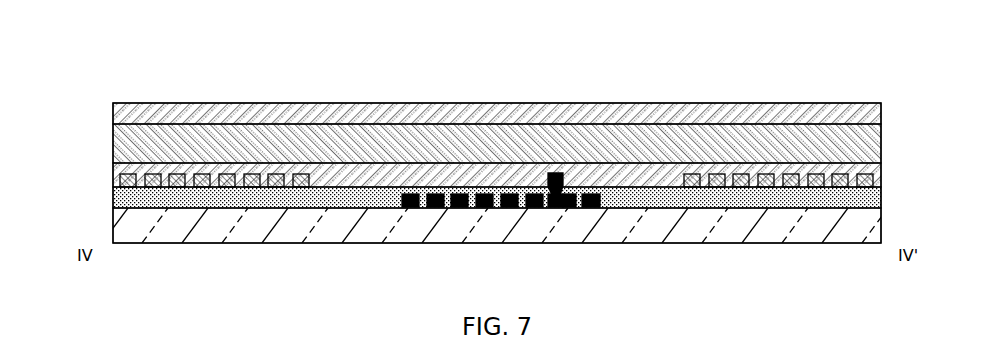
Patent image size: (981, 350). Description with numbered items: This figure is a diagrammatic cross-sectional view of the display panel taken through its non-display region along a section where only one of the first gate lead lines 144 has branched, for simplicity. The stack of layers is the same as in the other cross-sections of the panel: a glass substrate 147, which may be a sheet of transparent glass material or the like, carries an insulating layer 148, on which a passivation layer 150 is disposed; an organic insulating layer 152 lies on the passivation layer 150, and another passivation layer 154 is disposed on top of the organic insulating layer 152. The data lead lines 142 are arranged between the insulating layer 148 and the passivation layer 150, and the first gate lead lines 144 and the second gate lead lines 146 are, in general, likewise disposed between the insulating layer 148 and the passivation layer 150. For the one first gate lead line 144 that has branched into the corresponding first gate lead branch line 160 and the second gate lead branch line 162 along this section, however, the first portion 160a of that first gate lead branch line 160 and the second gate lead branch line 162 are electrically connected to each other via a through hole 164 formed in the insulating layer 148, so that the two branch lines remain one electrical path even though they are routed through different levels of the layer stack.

The data lead lines 142 is at (118, 175).
The first gate lead lines 144 is at (533, 195).
The second gate lead lines 146 is at (403, 196).
The glass substrate 147 is at (800, 230).
The insulating layer 148 is at (112, 197).
The passivation layer 150 is at (412, 173).
The organic insulating layer 152 is at (227, 138).
The another passivation layer 154 is at (722, 113).
The first gate lead branch line 160 is at (555, 207).
The first portion 160a is at (556, 175).
The second gate lead branch line 162 is at (568, 207).
The through hole 164 is at (575, 174).